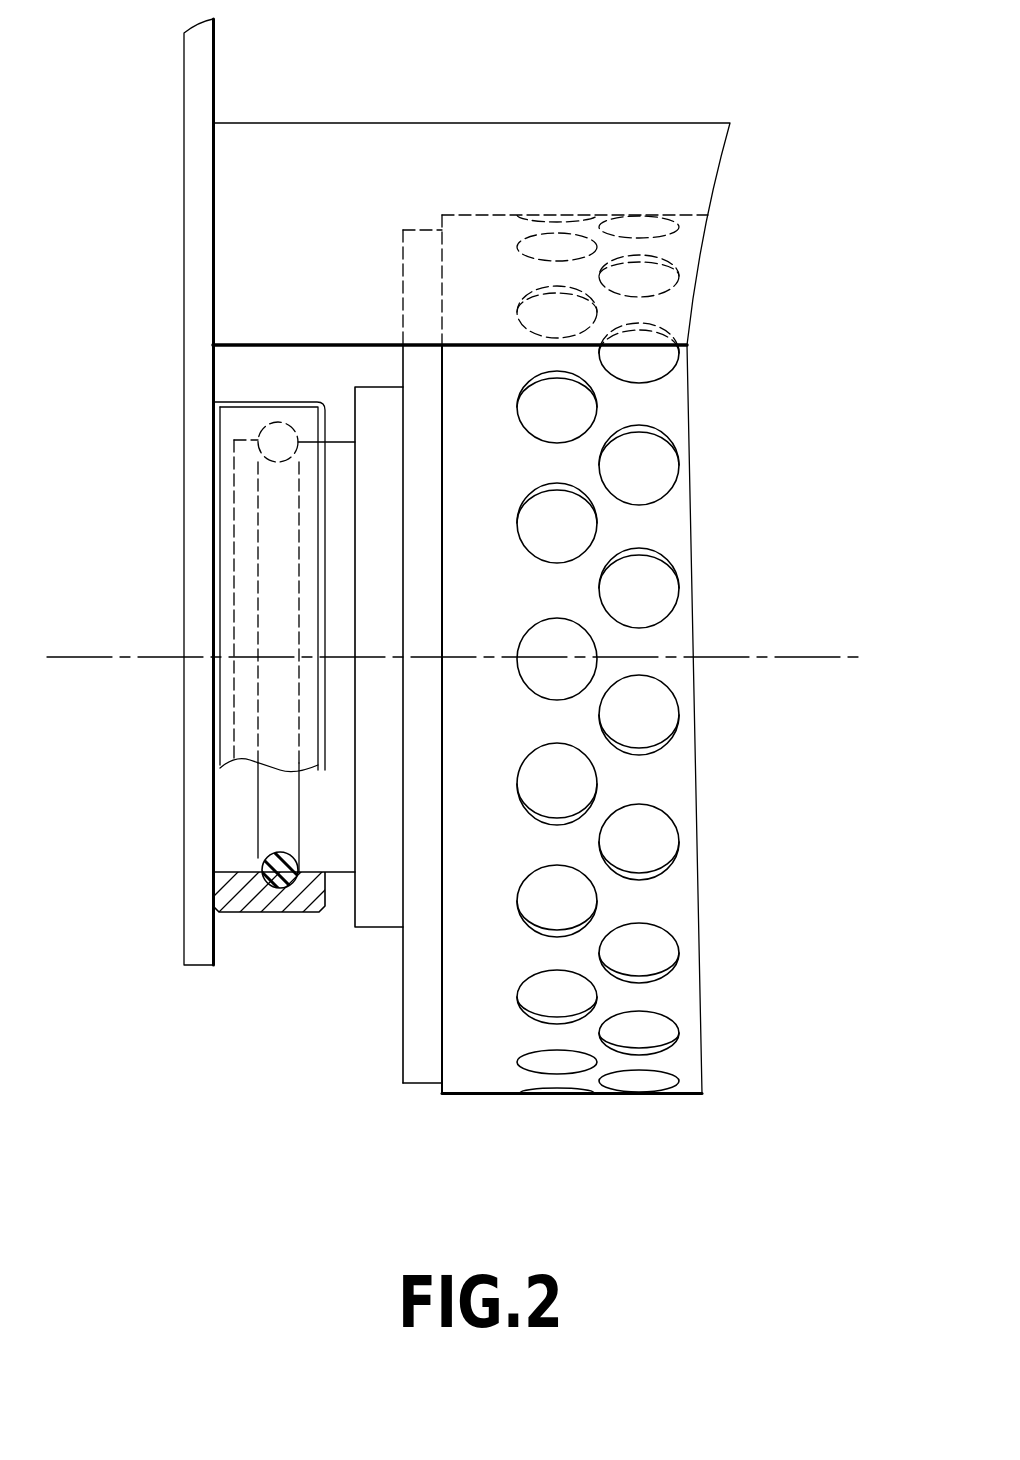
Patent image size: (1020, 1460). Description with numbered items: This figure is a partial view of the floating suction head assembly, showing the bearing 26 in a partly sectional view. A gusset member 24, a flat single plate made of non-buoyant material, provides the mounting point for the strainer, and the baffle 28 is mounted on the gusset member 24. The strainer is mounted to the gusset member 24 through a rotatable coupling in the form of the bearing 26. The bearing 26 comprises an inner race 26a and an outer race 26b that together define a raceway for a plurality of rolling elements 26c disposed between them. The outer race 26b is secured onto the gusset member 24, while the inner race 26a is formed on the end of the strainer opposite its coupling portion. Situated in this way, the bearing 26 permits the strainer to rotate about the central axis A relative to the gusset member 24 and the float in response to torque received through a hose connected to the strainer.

The gusset member 24 is at (184, 165).
The bearing 26 is at (235, 695).
The inner race 26a is at (278, 820).
The outer race 26b is at (267, 400).
The rolling elements 26c is at (265, 862).
The baffle 28 is at (318, 173).
The central axis A is at (775, 657).